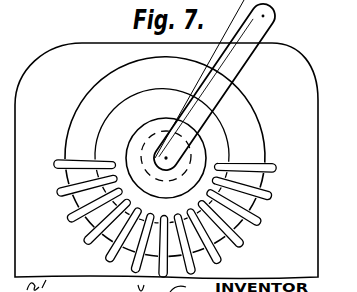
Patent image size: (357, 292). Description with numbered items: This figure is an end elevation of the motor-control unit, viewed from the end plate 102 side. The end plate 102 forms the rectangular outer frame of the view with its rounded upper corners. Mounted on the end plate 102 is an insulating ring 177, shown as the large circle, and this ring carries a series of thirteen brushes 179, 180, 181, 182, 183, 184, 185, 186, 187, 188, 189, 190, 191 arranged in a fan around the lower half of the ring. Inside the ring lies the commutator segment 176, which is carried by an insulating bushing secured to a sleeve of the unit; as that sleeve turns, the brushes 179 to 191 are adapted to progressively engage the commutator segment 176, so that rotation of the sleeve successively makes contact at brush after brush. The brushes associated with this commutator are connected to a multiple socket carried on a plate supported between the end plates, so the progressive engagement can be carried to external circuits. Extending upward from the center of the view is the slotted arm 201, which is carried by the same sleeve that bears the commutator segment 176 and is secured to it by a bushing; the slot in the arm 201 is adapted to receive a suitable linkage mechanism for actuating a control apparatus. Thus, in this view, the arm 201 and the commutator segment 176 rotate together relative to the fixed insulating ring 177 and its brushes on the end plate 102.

The end plate 102 is at (312, 243).
The commutator segment 176 is at (117, 173).
The insulating ring 177 is at (258, 132).
The brush 179 is at (57, 165).
The brush 180 is at (61, 193).
The brush 181 is at (71, 218).
The brush 182 is at (88, 241).
The brush 183 is at (110, 258).
The brush 184 is at (136, 269).
The brush 185 is at (168, 272).
The brush 186 is at (194, 268).
The brush 187 is at (219, 257).
The brush 188 is at (241, 241).
The brush 189 is at (257, 222).
The brush 190 is at (269, 196).
The brush 191 is at (272, 168).
The slotted arm 201 is at (270, 31).